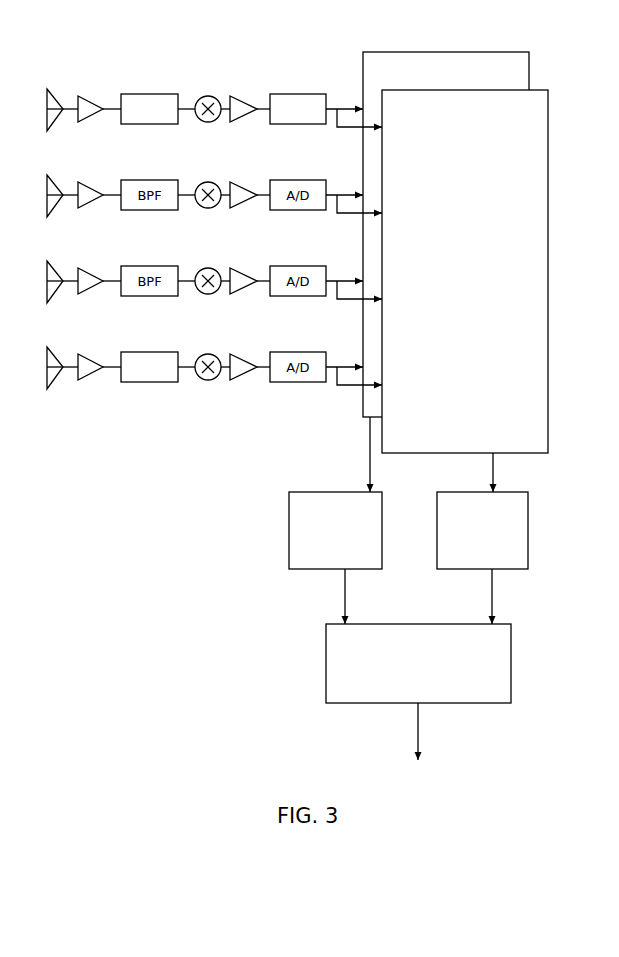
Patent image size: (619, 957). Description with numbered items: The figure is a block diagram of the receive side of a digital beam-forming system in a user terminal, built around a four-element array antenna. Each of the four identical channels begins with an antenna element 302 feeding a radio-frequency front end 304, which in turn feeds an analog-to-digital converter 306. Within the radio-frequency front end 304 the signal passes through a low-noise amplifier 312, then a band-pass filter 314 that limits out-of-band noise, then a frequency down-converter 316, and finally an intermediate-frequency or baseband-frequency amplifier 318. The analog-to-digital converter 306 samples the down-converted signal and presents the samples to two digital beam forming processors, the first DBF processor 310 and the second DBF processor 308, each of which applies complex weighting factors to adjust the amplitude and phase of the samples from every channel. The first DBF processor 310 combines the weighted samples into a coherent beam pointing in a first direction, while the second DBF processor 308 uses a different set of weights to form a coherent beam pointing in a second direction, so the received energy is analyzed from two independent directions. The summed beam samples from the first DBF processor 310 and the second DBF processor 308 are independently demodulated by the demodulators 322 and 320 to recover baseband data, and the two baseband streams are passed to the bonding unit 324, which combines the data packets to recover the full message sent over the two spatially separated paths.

The antenna element 302 is at (49, 204).
The radio-frequency front end 304 is at (259, 80).
The analog-to-digital converter 306 is at (298, 75).
The second DBF processor 308 is at (467, 222).
The first DBF processor 310 is at (487, 271).
The low-noise amplifier 312 is at (69, 395).
The band-pass filter 314 is at (140, 395).
The frequency down-converter 316 is at (189, 394).
The intermediate-frequency or baseband-frequency amplifier 318 is at (244, 403).
The demodulator 320 is at (294, 530).
The demodulator 322 is at (450, 545).
The bonding unit 324 is at (377, 663).